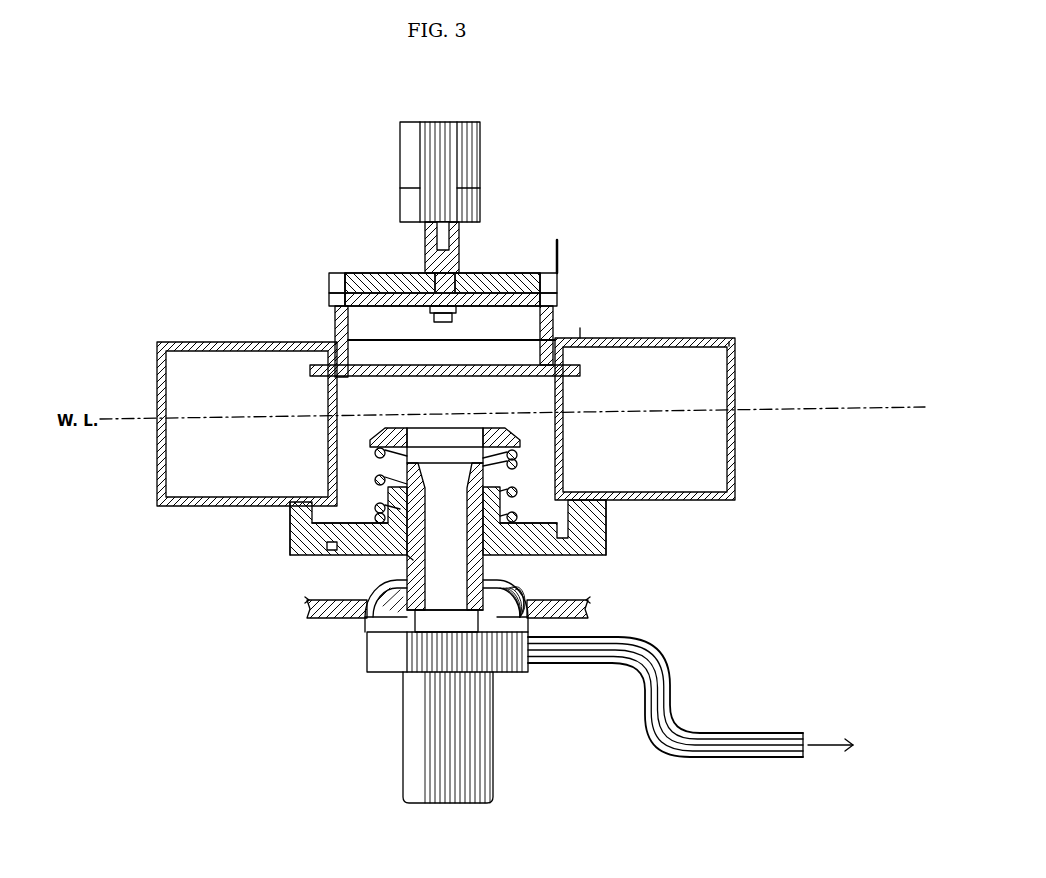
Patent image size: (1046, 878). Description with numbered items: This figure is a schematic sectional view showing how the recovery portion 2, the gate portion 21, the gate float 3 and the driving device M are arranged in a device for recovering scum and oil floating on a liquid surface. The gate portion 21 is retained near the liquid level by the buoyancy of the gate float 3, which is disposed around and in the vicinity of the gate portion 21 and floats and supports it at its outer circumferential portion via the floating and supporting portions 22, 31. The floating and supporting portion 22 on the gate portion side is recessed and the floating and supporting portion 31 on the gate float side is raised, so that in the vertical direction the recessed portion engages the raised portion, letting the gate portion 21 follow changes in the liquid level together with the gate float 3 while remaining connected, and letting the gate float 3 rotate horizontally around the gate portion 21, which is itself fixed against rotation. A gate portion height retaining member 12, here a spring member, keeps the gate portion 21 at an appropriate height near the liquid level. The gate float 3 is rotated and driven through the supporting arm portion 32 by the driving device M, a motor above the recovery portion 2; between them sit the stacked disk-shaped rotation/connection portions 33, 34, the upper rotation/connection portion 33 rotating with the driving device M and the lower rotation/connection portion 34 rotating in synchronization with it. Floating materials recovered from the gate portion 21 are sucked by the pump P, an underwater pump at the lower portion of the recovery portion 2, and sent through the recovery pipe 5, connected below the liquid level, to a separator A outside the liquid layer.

The driving device M is at (437, 143).
The rotation/connection portion 33 is at (487, 246).
The rotation/connection portion 34 is at (508, 265).
The supporting arm portion 32 is at (570, 333).
The gate float 3 is at (222, 344).
The gate portion 21 is at (512, 440).
The gate portion height retaining member 12 is at (327, 530).
The floating and supporting portion 31 is at (292, 556).
The floating and supporting portion 22 is at (357, 543).
The recovery portion 2 is at (300, 672).
The recovery pipe 5 is at (686, 745).
The pump P is at (453, 772).
The separator A is at (843, 745).